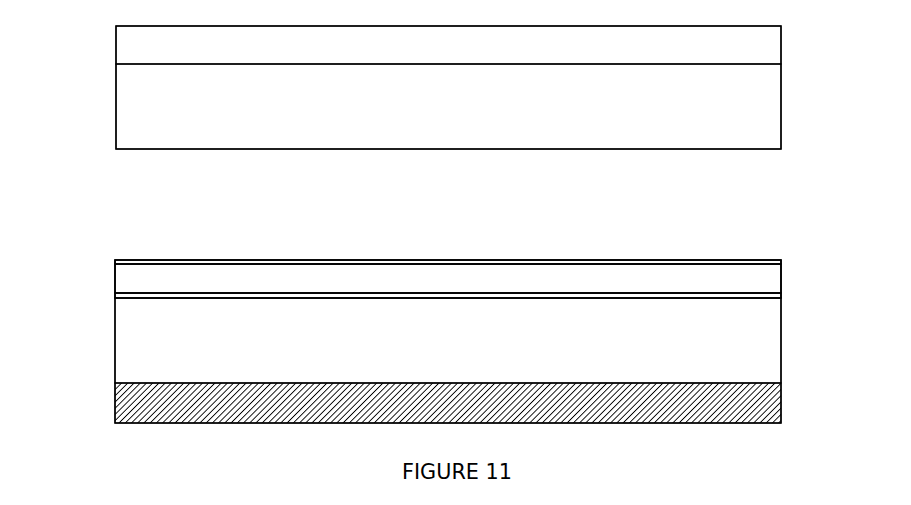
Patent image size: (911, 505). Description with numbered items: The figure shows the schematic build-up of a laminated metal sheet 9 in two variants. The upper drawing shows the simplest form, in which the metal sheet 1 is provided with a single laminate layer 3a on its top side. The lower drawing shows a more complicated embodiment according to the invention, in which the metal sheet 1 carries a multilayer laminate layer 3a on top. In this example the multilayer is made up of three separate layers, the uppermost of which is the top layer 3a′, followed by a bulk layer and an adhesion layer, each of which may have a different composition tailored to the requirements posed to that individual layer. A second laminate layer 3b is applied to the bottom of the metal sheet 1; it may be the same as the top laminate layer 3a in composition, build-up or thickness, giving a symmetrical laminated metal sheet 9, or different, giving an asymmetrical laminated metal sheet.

The metal sheet 1 is at (448, 223).
The laminate layer 3a is at (791, 298).
The top layer 3a′ is at (114, 262).
The second laminate layer 3b is at (791, 383).
The laminated metal sheet 9 is at (792, 26).